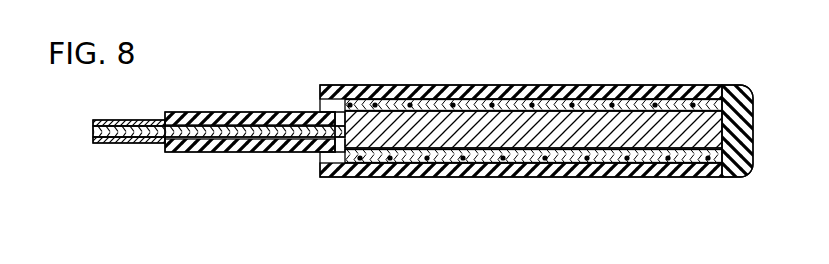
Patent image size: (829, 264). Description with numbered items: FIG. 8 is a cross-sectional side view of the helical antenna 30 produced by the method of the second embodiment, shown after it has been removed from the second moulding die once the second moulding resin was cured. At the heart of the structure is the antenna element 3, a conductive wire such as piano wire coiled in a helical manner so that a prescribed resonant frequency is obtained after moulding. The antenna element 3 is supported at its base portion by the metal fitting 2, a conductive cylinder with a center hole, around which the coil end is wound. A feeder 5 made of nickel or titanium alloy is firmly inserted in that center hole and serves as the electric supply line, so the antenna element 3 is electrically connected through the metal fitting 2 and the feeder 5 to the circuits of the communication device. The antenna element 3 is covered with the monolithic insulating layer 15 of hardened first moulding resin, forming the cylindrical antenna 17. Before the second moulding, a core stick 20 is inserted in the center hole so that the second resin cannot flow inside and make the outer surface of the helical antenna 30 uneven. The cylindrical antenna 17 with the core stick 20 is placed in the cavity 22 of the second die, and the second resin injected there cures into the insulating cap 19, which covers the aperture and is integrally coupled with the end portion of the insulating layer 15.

The helical antenna 30 is at (253, 92).
The cavity 22 is at (423, 178).
The insulating layer 15 is at (545, 98).
The insulating cap 19 is at (736, 150).
The core stick 20 is at (628, 130).
The cylindrical antenna 17 is at (545, 160).
The antenna element 3 is at (410, 103).
The metal fitting 2 is at (342, 170).
The feeder 5 is at (208, 135).